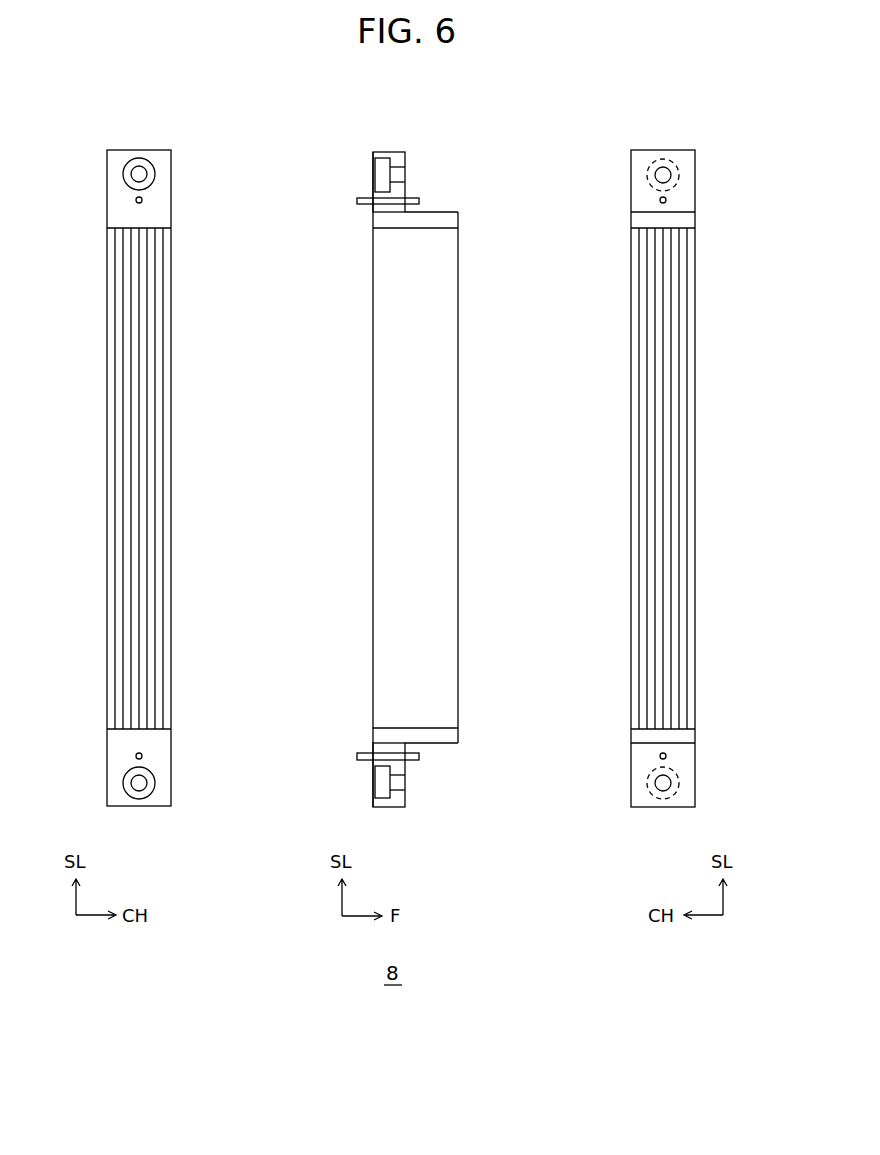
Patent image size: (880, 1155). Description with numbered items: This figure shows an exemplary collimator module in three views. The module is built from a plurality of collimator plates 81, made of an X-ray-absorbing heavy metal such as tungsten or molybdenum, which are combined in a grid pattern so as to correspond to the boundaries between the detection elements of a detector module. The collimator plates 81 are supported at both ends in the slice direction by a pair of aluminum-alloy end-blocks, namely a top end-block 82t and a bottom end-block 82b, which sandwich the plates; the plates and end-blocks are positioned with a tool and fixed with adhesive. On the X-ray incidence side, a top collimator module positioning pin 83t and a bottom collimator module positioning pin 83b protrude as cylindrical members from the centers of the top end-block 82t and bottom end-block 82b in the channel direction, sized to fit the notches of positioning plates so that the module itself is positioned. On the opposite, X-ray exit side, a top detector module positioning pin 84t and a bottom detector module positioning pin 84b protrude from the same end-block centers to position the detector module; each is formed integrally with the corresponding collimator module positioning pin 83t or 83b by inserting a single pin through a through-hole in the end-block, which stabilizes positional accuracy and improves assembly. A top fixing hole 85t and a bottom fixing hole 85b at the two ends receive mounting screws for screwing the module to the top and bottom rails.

The collimator plate 81 is at (172, 432).
The top end-block 82t is at (118, 218).
The bottom end-block 82b is at (123, 746).
The top collimator module positioning pin 83t is at (418, 201).
The bottom collimator module positioning pin 83b is at (418, 756).
The top detector module positioning pin 84t is at (135, 200).
The bottom detector module positioning pin 84b is at (135, 756).
The top fixing hole 85t is at (139, 174).
The bottom fixing hole 85b is at (139, 783).